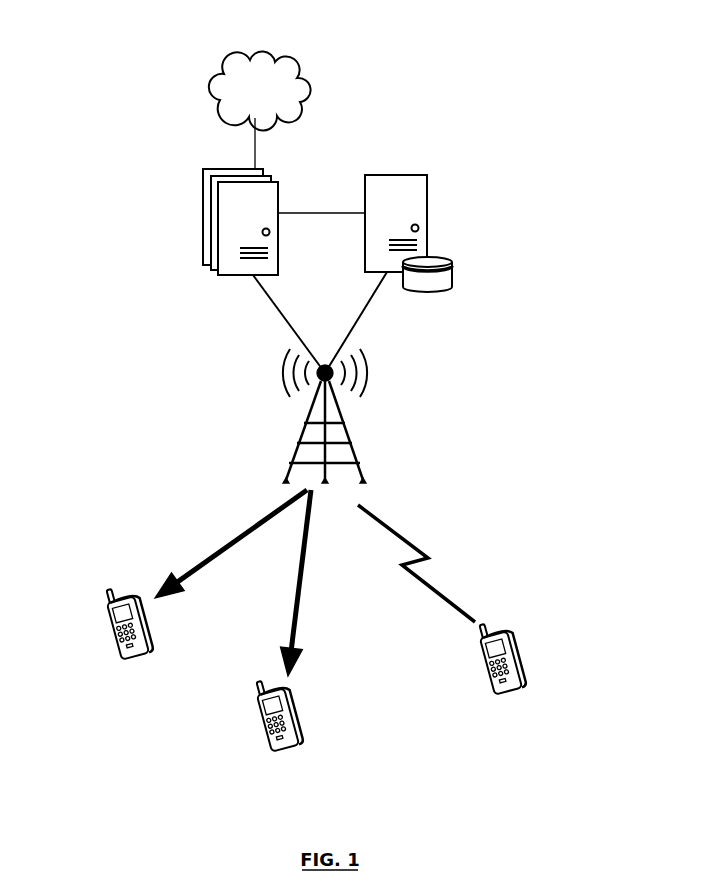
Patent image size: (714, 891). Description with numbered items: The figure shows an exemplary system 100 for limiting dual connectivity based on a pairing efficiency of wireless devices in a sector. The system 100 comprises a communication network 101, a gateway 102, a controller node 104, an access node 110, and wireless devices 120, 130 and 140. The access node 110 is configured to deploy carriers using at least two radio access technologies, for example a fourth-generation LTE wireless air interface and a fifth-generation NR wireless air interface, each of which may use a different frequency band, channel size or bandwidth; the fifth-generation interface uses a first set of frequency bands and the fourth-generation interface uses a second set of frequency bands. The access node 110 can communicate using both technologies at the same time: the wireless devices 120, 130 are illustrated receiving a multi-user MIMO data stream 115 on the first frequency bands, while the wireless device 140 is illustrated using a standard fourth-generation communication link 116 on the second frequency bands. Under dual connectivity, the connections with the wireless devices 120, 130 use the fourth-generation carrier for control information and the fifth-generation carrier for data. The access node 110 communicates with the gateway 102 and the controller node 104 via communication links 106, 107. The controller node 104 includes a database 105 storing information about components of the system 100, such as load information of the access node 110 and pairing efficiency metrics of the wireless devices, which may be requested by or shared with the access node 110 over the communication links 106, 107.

The system 100 is at (434, 34).
The communication network 101 is at (240, 95).
The gateway 102 is at (221, 168).
The controller node 104 is at (427, 175).
The database 105 is at (445, 257).
The communication link 106 is at (364, 310).
The communication link 107 is at (272, 301).
The access node 110 is at (303, 450).
The MU-MIMO data stream 115 is at (193, 534).
The 4G communication link 116 is at (398, 535).
The wireless device 120 is at (115, 648).
The wireless device 130 is at (263, 736).
The wireless device 140 is at (516, 686).